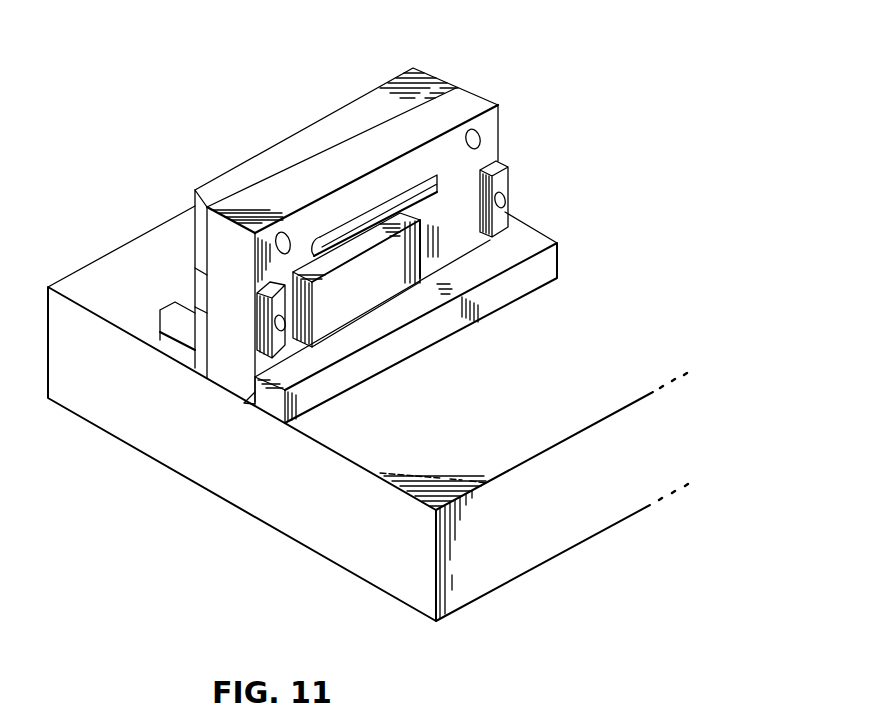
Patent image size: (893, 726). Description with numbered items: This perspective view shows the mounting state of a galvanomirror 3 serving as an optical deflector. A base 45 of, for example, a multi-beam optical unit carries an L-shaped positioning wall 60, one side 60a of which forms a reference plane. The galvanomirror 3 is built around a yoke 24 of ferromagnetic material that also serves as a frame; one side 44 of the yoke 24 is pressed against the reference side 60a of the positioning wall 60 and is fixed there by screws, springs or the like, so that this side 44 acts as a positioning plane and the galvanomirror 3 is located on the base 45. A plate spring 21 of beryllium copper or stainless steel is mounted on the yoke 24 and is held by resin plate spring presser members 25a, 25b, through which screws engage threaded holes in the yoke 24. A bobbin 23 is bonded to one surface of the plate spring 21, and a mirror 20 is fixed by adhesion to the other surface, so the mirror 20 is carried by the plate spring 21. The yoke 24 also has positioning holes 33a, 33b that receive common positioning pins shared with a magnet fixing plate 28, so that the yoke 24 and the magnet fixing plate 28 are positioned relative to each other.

The galvanomirror 3 is at (507, 66).
The mirror 20 is at (405, 283).
The plate spring 21 is at (417, 205).
The bobbin 23 is at (373, 217).
The yoke 24 is at (231, 377).
The plate spring presser member 25a is at (505, 223).
The plate spring presser member 25b is at (282, 342).
The magnet fixing plate 28 is at (180, 353).
The positioning hole 33a is at (483, 140).
The positioning hole 33b is at (287, 230).
The one side of yoke 44 is at (441, 144).
The base 45 is at (340, 545).
The L-shaped positioning wall 60 is at (275, 403).
The reference plane side 60a is at (243, 400).